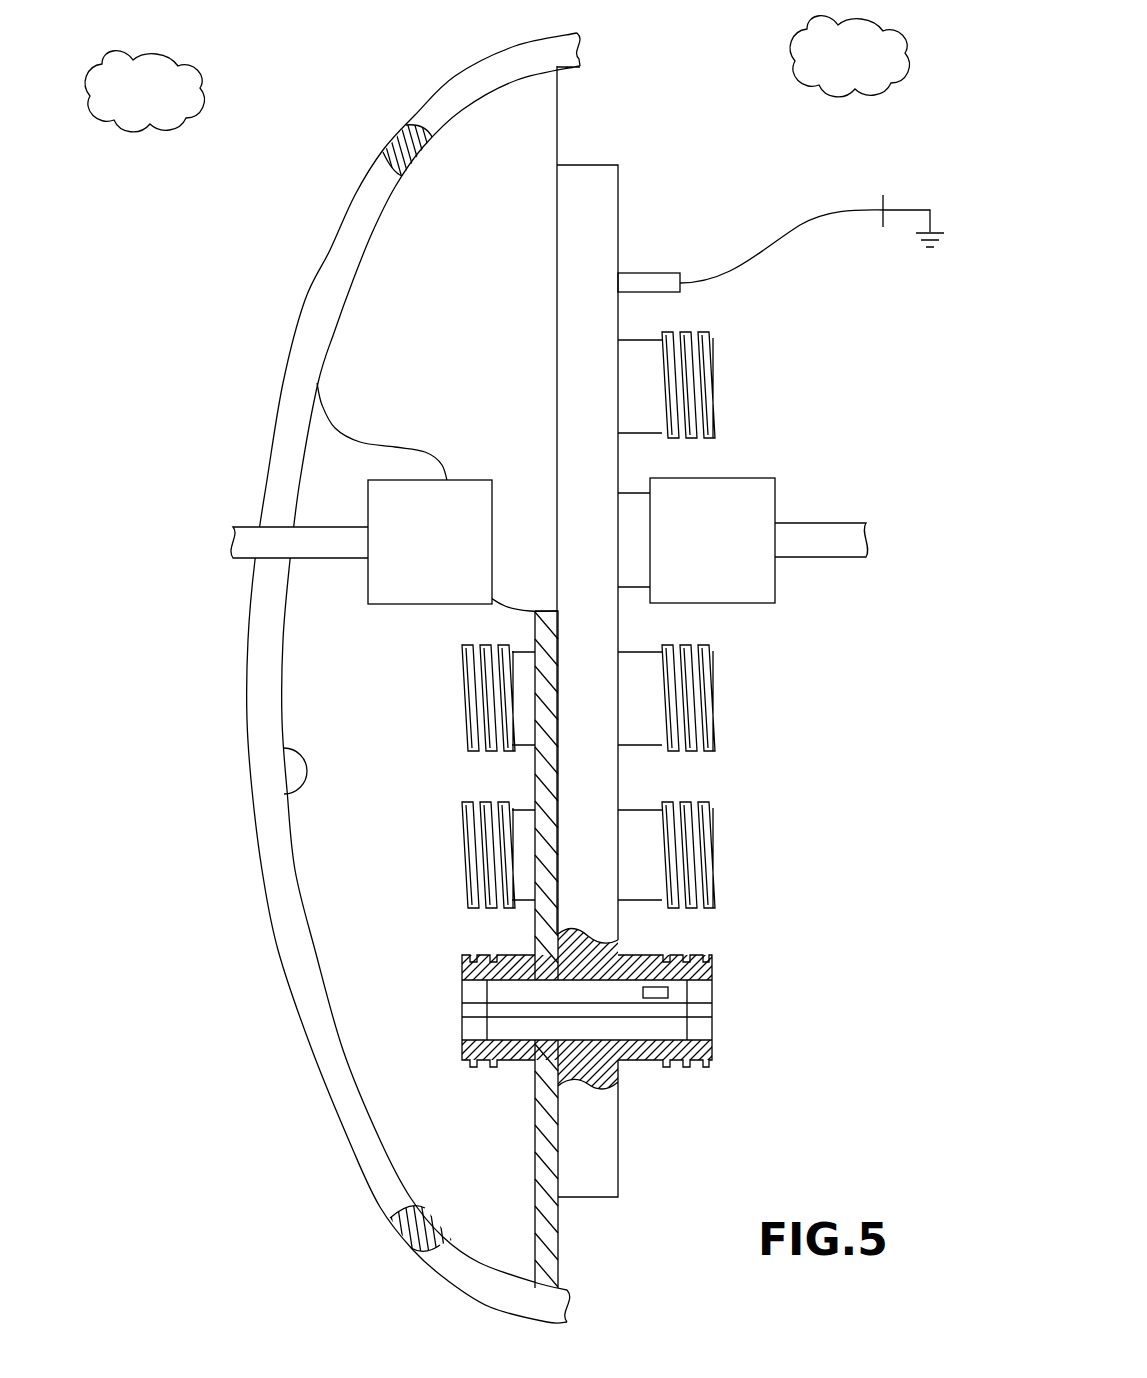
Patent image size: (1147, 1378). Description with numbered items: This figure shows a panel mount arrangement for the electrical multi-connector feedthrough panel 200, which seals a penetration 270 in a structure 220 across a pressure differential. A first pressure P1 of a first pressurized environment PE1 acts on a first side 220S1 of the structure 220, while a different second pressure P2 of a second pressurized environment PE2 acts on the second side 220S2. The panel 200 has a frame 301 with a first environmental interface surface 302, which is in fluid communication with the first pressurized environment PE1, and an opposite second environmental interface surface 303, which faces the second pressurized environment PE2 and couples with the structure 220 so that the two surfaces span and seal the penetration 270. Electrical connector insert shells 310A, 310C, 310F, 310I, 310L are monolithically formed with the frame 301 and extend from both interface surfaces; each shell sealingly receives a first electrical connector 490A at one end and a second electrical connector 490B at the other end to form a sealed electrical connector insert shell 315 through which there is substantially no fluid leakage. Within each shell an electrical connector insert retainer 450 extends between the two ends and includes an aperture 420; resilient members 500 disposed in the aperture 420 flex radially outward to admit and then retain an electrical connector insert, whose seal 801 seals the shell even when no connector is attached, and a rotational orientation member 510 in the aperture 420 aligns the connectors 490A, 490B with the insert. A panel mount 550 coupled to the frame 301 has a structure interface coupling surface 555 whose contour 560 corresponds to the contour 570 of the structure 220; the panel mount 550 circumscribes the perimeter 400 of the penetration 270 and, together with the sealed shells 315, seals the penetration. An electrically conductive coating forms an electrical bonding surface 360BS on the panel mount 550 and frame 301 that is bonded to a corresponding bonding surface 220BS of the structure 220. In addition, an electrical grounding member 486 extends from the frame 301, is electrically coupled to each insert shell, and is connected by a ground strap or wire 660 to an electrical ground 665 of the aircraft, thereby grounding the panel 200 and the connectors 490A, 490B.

The electrical multi-connector feedthrough panel 200 is at (613, 125).
The structure 220 is at (415, 118).
The corresponding bonding surface 220BS is at (338, 308).
The first side 220S1 is at (840, 338).
The second side 220S2 is at (434, 868).
The penetration 270 is at (301, 1136).
The frame 301 is at (605, 190).
The first environmental interface surface 302 is at (618, 782).
The second environmental interface surface 303 is at (535, 780).
The electrical connector insert shell 310A is at (715, 372).
The electrical connector insert shell 310C is at (637, 492).
The electrical connector insert shell 310F is at (715, 690).
The electrical connector insert shell 310I is at (715, 842).
The electrical connector insert shell 310L is at (710, 962).
The sealed electrical connector insert shell 315 is at (800, 610).
The electrical bonding surface 360BS is at (387, 193).
The perimeter 400 is at (367, 163).
The aperture 420 is at (743, 1062).
The electrical connector insert retainer 450 is at (744, 1026).
The electrical grounding member 486 is at (667, 277).
The first electrical connector 490A is at (780, 500).
The second electrical connector 490B is at (372, 606).
The resilient member 500 is at (522, 1063).
The rotational orientation member 510 is at (477, 1003).
The panel mount 550 is at (560, 107).
The structure interface coupling surface 555 is at (343, 287).
The contour 560 is at (360, 243).
The contour 570 is at (286, 792).
The ground strap/wire 660 is at (767, 253).
The electrical ground 665 is at (907, 207).
The seal 801 is at (662, 990).
The first pressure P1 is at (839, 72).
The second pressure P2 is at (133, 109).
The first pressurized environment PE1 is at (900, 35).
The second pressurized environment PE2 is at (147, 58).